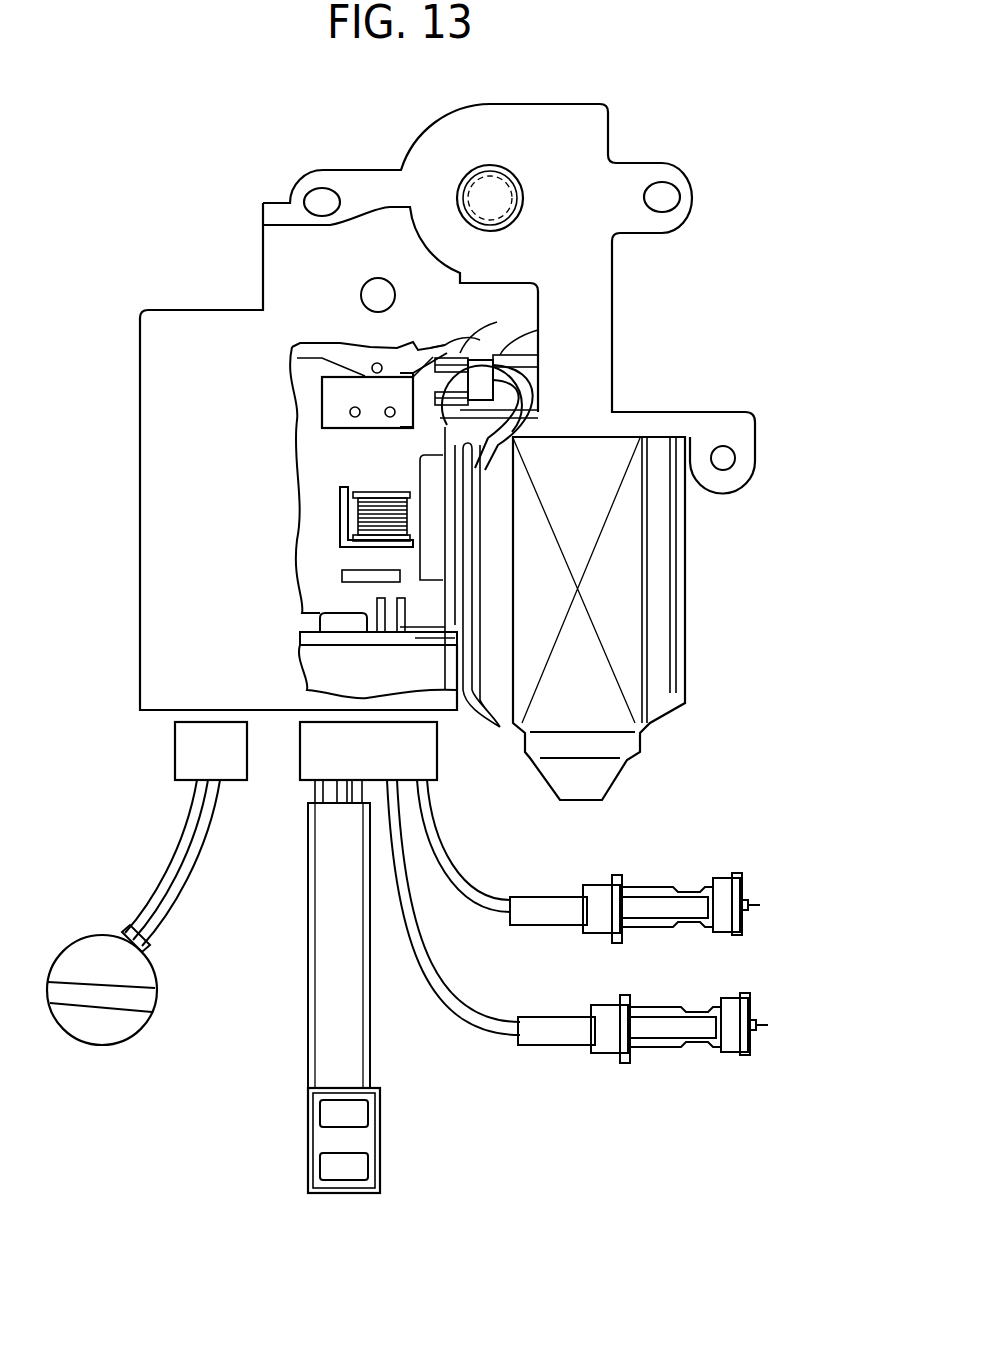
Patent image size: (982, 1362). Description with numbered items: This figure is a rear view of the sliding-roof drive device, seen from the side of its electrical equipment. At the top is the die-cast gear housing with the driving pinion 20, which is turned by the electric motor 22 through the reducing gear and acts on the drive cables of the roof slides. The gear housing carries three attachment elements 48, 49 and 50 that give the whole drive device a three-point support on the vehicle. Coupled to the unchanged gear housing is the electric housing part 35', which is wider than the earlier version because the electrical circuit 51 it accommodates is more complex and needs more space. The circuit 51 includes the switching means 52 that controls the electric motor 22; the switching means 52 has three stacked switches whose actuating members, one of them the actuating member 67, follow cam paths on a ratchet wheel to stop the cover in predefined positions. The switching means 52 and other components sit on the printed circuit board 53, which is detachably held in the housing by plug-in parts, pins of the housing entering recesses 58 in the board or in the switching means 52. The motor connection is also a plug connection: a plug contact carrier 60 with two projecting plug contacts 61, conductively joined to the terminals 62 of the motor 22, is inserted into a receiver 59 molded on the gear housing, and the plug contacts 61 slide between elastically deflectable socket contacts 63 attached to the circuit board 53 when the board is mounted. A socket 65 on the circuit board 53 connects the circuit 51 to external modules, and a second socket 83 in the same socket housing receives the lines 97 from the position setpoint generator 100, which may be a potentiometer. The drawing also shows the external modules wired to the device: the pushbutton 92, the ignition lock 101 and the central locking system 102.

The driving pinion 20 is at (488, 198).
The electric motor 22 is at (662, 607).
The electric housing part 35' is at (447, 407).
The attachment element 48 is at (318, 187).
The attachment element 49 is at (667, 176).
The attachment element 50 is at (738, 473).
The electrical circuit 51 is at (320, 532).
The switching means 52 is at (337, 397).
The printed circuit board 53 is at (325, 473).
The recesses 58 is at (388, 418).
The receiver 59 is at (497, 402).
The plug contact carrier 60 is at (498, 362).
The plug contacts 61 is at (538, 325).
The terminals 62 is at (500, 727).
The socket contacts 63 is at (512, 447).
The socket 65 is at (317, 753).
The actuating member 67 is at (373, 364).
The second socket 83 is at (190, 748).
The pushbutton 92 is at (362, 1140).
The line 97 is at (163, 887).
The position setpoint generator 100 is at (102, 1027).
The ignition lock 101 is at (762, 1030).
The central locking system 102 is at (762, 910).